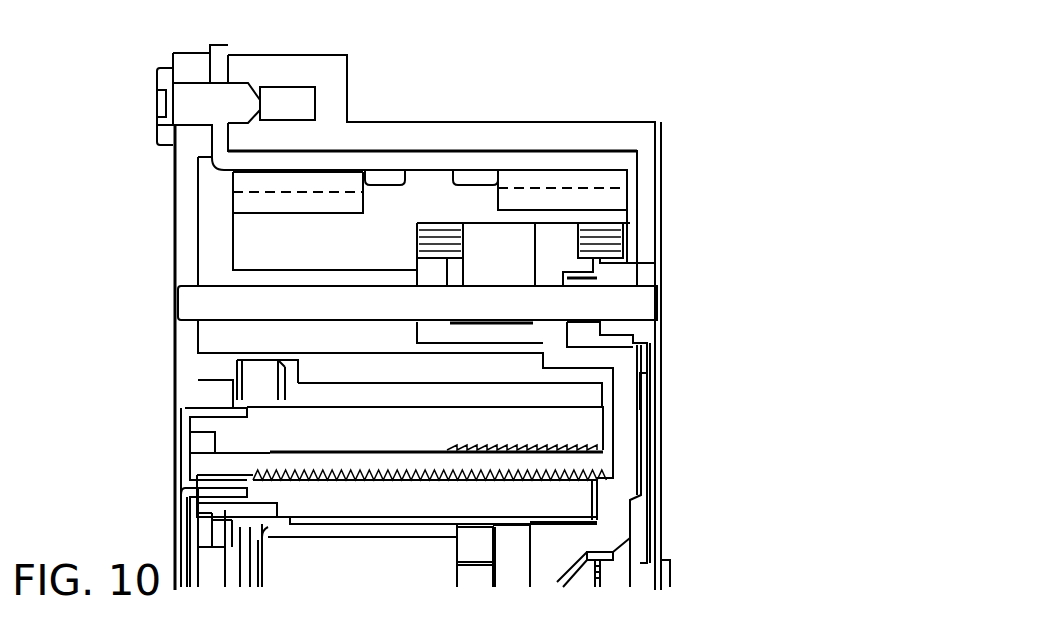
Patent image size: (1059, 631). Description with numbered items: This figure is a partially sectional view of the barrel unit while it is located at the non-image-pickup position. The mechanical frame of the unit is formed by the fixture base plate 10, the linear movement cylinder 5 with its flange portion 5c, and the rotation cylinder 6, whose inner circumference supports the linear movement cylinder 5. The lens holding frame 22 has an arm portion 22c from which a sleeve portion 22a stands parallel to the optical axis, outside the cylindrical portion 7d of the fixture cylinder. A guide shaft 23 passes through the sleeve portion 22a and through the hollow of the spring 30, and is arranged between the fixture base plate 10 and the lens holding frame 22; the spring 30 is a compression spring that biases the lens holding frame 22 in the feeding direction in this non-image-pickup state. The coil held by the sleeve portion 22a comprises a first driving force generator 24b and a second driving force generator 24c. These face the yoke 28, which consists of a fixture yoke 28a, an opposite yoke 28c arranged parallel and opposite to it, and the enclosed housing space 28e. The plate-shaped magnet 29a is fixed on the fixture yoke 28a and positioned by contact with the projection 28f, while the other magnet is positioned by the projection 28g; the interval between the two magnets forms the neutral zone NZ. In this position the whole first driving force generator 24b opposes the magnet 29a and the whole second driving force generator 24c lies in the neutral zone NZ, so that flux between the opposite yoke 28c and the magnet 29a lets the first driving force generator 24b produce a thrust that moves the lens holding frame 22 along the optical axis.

The fixture base plate 10 is at (656, 122).
The yoke 28 is at (197, 163).
The fixture yoke 28a is at (580, 160).
The projection 28g is at (380, 180).
The projection 28f is at (477, 175).
The magnet 29a is at (233, 197).
The housing space 28e is at (253, 244).
The first driving force generator 24b is at (603, 238).
The second driving force generator 24c is at (463, 243).
The guide shaft 23 is at (192, 303).
The opposite yoke 28c is at (280, 282).
The spring 30 is at (578, 325).
The cylindrical portion 7d is at (233, 382).
The rotation cylinder 6 is at (262, 433).
The sleeve portion 22a is at (495, 332).
The flange portion 5c is at (607, 422).
The arm portion 22c is at (628, 458).
The linear movement cylinder 5 is at (553, 460).
The lens holding frame 22 is at (567, 537).
The neutral zone NZ is at (498, 210).